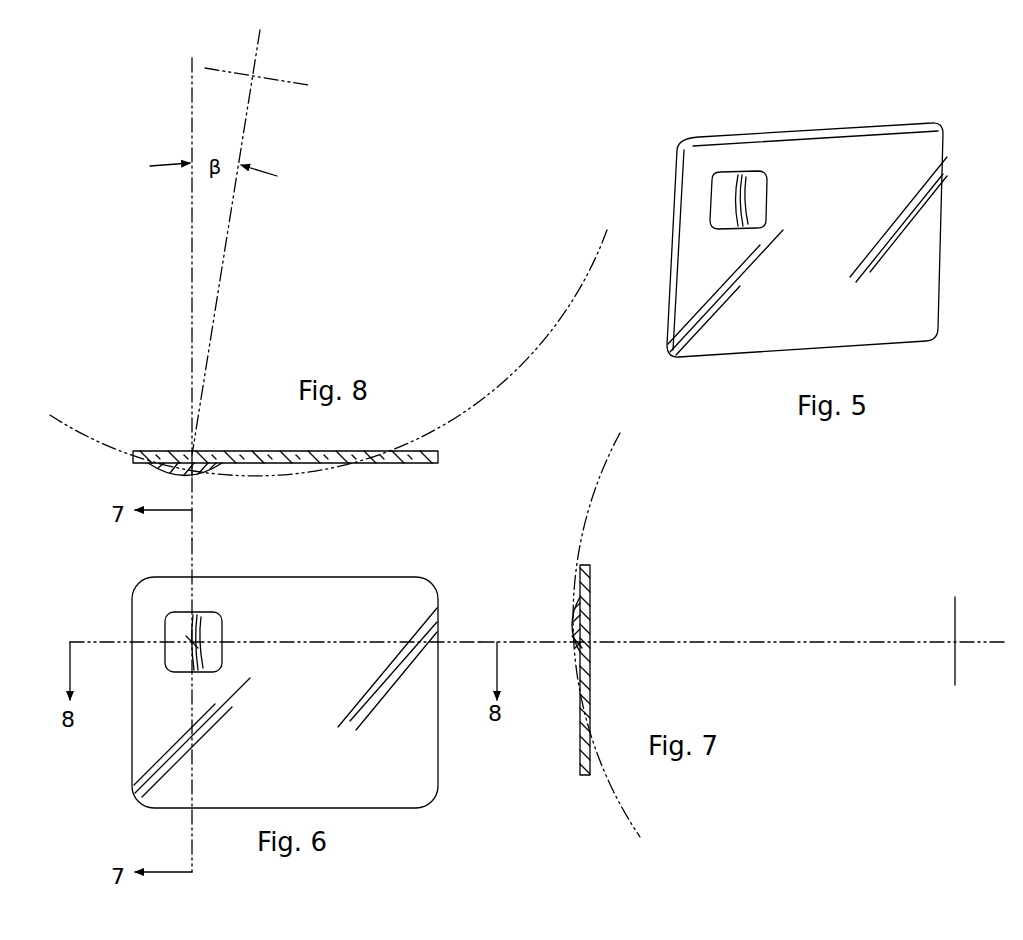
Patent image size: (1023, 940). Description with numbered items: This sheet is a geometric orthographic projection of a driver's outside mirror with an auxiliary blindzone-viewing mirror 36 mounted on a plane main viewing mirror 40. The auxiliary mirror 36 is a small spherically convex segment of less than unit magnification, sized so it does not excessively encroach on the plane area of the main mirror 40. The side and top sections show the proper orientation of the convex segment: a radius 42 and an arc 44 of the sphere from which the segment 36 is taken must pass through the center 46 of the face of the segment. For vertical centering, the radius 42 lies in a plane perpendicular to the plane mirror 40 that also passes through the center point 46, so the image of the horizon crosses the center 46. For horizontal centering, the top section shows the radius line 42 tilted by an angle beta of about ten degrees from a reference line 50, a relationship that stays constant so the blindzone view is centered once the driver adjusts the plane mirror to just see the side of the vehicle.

In FIG. 8, the auxiliary blindzone-viewing mirror 36 is at (181, 471).
In FIG. 5, the auxiliary blindzone-viewing mirror 36 is at (757, 197).
In FIG. 6, the auxiliary blindzone-viewing mirror 36 is at (212, 629).
In FIG. 7, the auxiliary blindzone-viewing mirror 36 is at (572, 607).
In FIG. 8, the plane main viewing mirror 40 is at (393, 465).
In FIG. 5, the plane main viewing mirror 40 is at (698, 287).
In FIG. 6, the plane main viewing mirror 40 is at (150, 748).
In FIG. 7, the plane main viewing mirror 40 is at (580, 735).
In FIG. 8, the radius 42 is at (230, 232).
In FIG. 7, the radius 42 is at (748, 640).
In FIG. 8, the arc 44 is at (517, 370).
In FIG. 7, the arc 44 is at (608, 460).
In FIG. 8, the center of the face of segment 46 is at (195, 471).
In FIG. 6, the center of the face of segment 46 is at (192, 642).
In FIG. 7, the center of the face of segment 46 is at (574, 630).
In FIG. 8, the line 50 is at (192, 275).